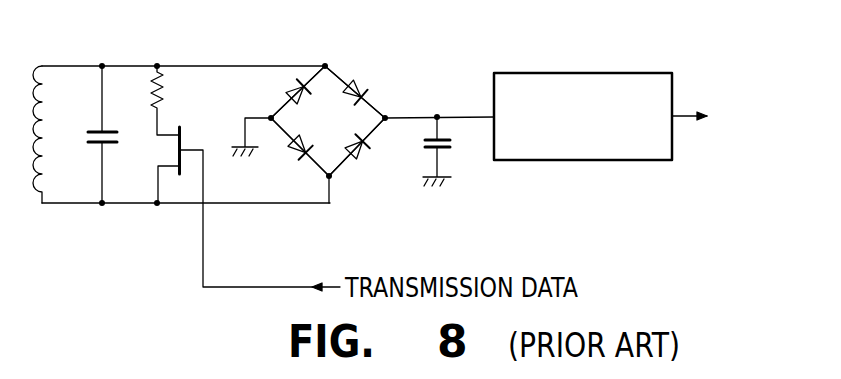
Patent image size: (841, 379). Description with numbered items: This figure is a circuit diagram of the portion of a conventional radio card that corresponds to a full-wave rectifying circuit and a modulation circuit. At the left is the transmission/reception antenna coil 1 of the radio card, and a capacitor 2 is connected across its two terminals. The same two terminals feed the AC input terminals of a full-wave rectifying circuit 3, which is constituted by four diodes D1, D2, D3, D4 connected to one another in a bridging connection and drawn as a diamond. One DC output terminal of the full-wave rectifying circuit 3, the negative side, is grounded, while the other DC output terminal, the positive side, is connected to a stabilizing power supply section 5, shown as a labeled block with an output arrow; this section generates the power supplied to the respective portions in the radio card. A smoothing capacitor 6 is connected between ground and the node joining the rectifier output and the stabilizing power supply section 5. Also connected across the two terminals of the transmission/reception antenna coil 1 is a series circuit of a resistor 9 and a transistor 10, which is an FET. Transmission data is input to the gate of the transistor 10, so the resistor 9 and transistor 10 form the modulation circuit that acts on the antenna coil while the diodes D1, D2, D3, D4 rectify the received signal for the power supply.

The transmission/reception antenna coil 1 is at (32, 148).
The capacitor 2 is at (93, 142).
The full-wave rectifying circuit 3 is at (327, 119).
The stabilizing power supply section 5 is at (494, 78).
The smoothing capacitor 6 is at (449, 148).
The resistor 9 is at (164, 101).
The transistor (FET) 10 is at (156, 148).
The diode D1 is at (284, 86).
The diode D2 is at (292, 150).
The diode D3 is at (358, 84).
The diode D4 is at (361, 163).